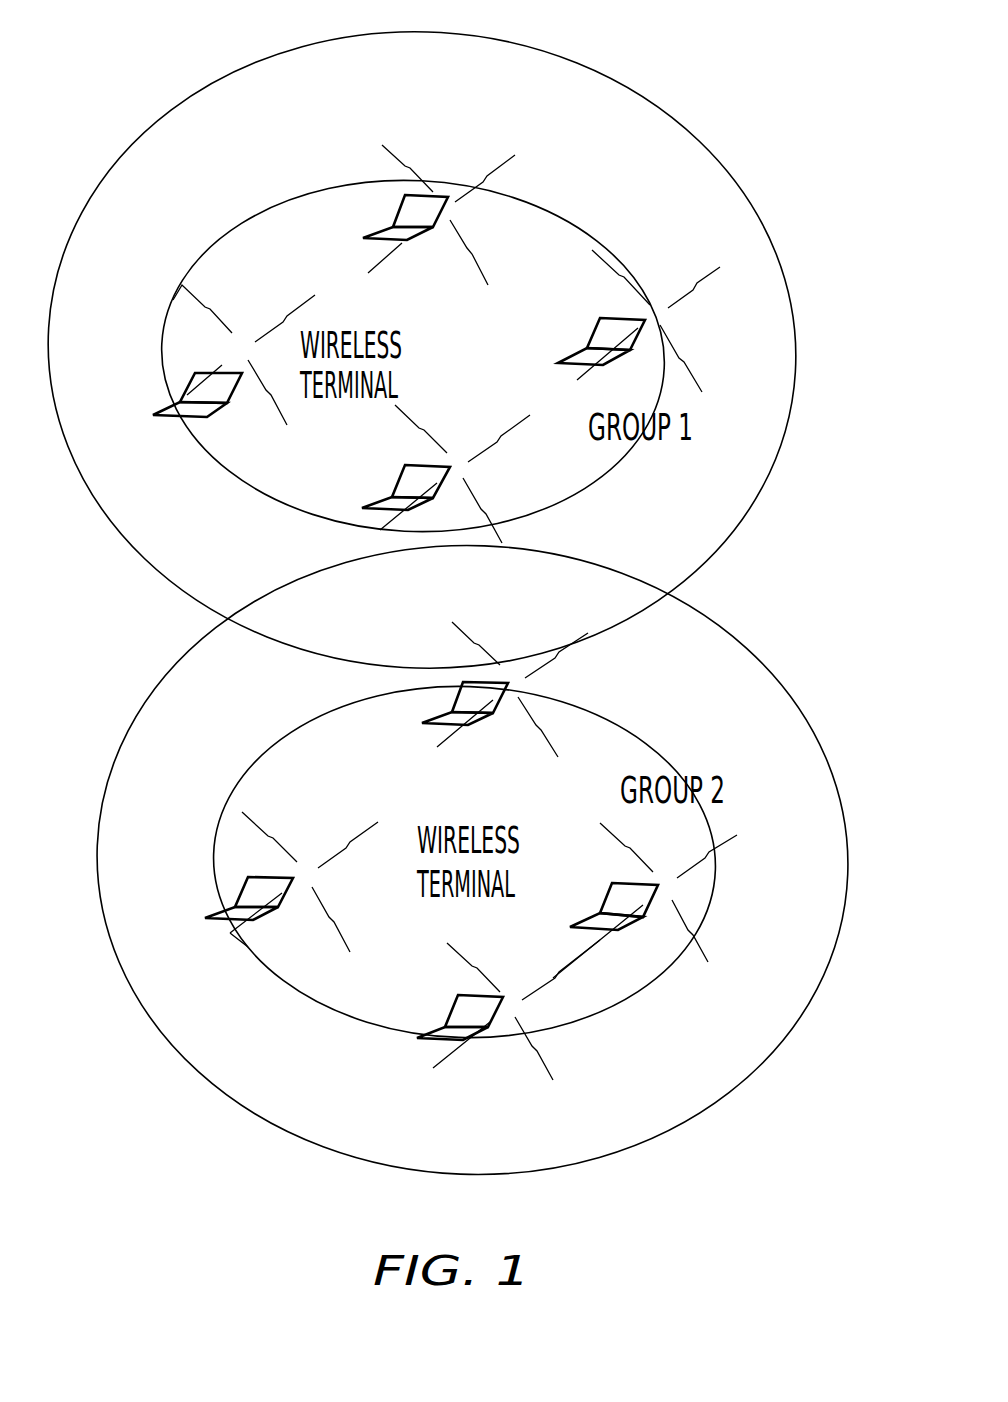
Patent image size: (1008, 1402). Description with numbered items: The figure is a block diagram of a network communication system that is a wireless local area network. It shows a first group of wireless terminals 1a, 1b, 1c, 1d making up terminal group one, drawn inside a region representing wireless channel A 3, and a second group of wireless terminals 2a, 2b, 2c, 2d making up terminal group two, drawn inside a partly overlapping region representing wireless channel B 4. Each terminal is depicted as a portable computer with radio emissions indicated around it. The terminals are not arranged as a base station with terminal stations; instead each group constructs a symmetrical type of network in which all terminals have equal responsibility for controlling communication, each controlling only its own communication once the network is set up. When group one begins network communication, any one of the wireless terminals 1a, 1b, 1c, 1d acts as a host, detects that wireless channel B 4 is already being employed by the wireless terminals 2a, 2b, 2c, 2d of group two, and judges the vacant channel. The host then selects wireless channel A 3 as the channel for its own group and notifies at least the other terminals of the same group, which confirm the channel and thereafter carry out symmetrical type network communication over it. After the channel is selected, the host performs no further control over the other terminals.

The wireless terminal 1a is at (240, 380).
The wireless terminal 1b is at (398, 480).
The wireless terminal 1c is at (588, 347).
The wireless terminal 1d is at (418, 245).
The wireless terminal 2a is at (288, 893).
The wireless terminal 2b is at (450, 1015).
The wireless terminal 2c is at (612, 883).
The wireless terminal 2d is at (477, 723).
The wireless channel A 3 is at (750, 207).
The wireless channel B 4 is at (745, 650).